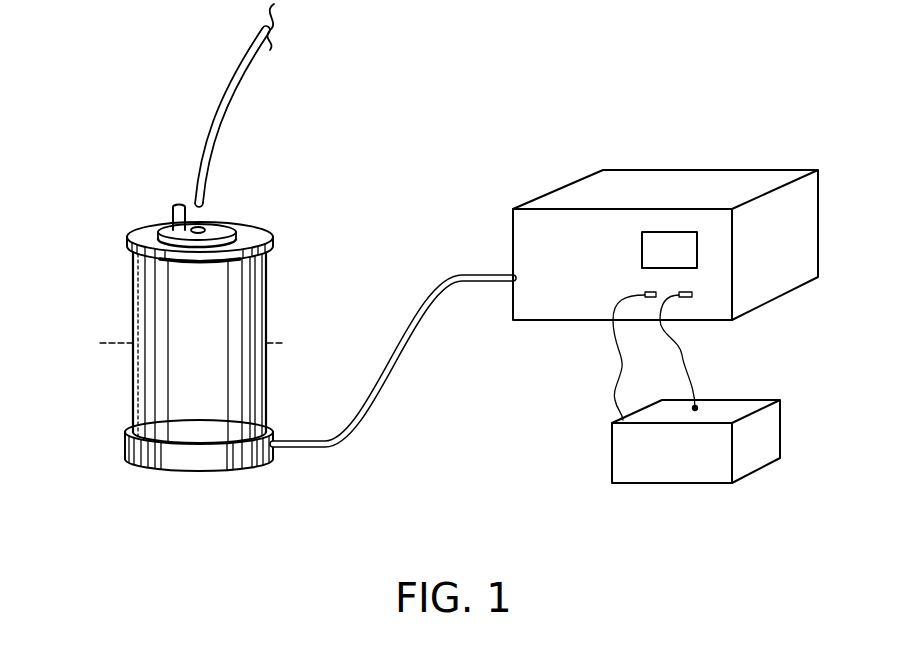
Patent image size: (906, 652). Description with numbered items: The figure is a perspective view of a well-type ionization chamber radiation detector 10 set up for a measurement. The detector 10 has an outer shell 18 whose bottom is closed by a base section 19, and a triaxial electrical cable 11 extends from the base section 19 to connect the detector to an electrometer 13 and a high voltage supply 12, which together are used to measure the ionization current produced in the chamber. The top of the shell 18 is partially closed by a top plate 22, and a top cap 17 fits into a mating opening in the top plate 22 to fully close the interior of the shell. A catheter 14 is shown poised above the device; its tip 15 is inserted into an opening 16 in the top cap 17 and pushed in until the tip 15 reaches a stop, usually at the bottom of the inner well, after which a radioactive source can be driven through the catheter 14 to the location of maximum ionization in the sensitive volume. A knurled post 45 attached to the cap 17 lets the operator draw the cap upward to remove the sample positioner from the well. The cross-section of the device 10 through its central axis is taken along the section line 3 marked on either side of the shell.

The ionization chamber radiation detector 10 is at (195, 260).
The triaxial electrical cable 11 is at (387, 357).
The high voltage supply 12 is at (672, 483).
The electrometer 13 is at (670, 178).
The catheter 14 is at (215, 77).
The tip 15 is at (190, 200).
The opening 16 is at (205, 225).
The top cap 17 is at (234, 226).
The outer shell 18 is at (132, 382).
The base section 19 is at (203, 465).
The top plate 22 is at (142, 232).
The knurled post 45 is at (170, 218).
The section line 3- 3 is at (83, 347).